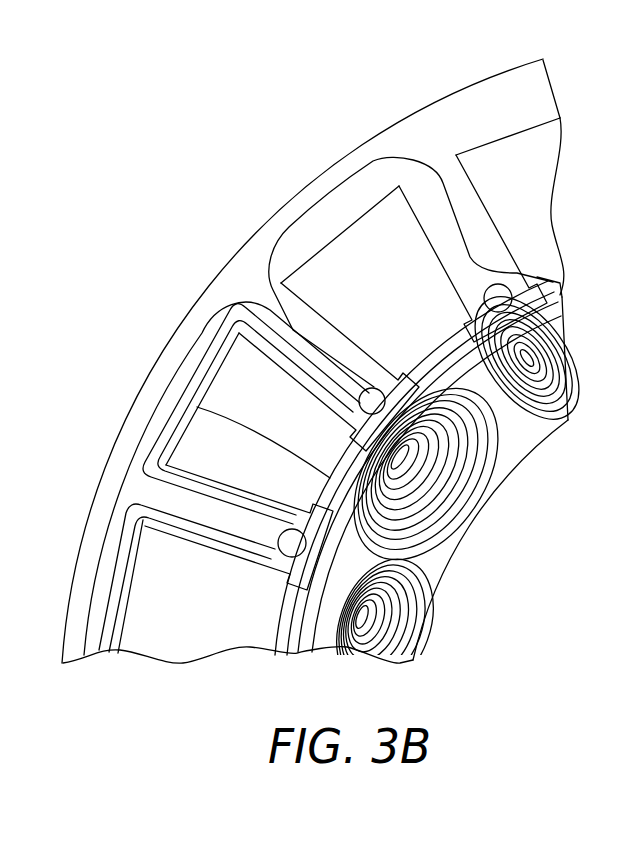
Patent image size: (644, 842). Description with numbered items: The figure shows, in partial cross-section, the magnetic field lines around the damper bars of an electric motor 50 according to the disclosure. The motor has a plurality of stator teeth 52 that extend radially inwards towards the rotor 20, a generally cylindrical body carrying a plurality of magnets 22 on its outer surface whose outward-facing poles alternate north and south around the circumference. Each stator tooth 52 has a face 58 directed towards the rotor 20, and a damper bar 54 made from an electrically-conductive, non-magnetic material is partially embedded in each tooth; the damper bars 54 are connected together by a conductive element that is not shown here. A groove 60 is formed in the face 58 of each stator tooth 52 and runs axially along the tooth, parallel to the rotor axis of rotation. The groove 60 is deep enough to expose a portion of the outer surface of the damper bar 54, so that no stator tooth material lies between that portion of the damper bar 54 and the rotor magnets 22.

The electric motor 50 is at (487, 95).
The stator tooth 52 is at (468, 195).
The damper bar 54 is at (366, 392).
The face 58 is at (561, 297).
The rotor 20 is at (510, 462).
The magnet 22 is at (547, 348).
The groove 60 is at (323, 613).